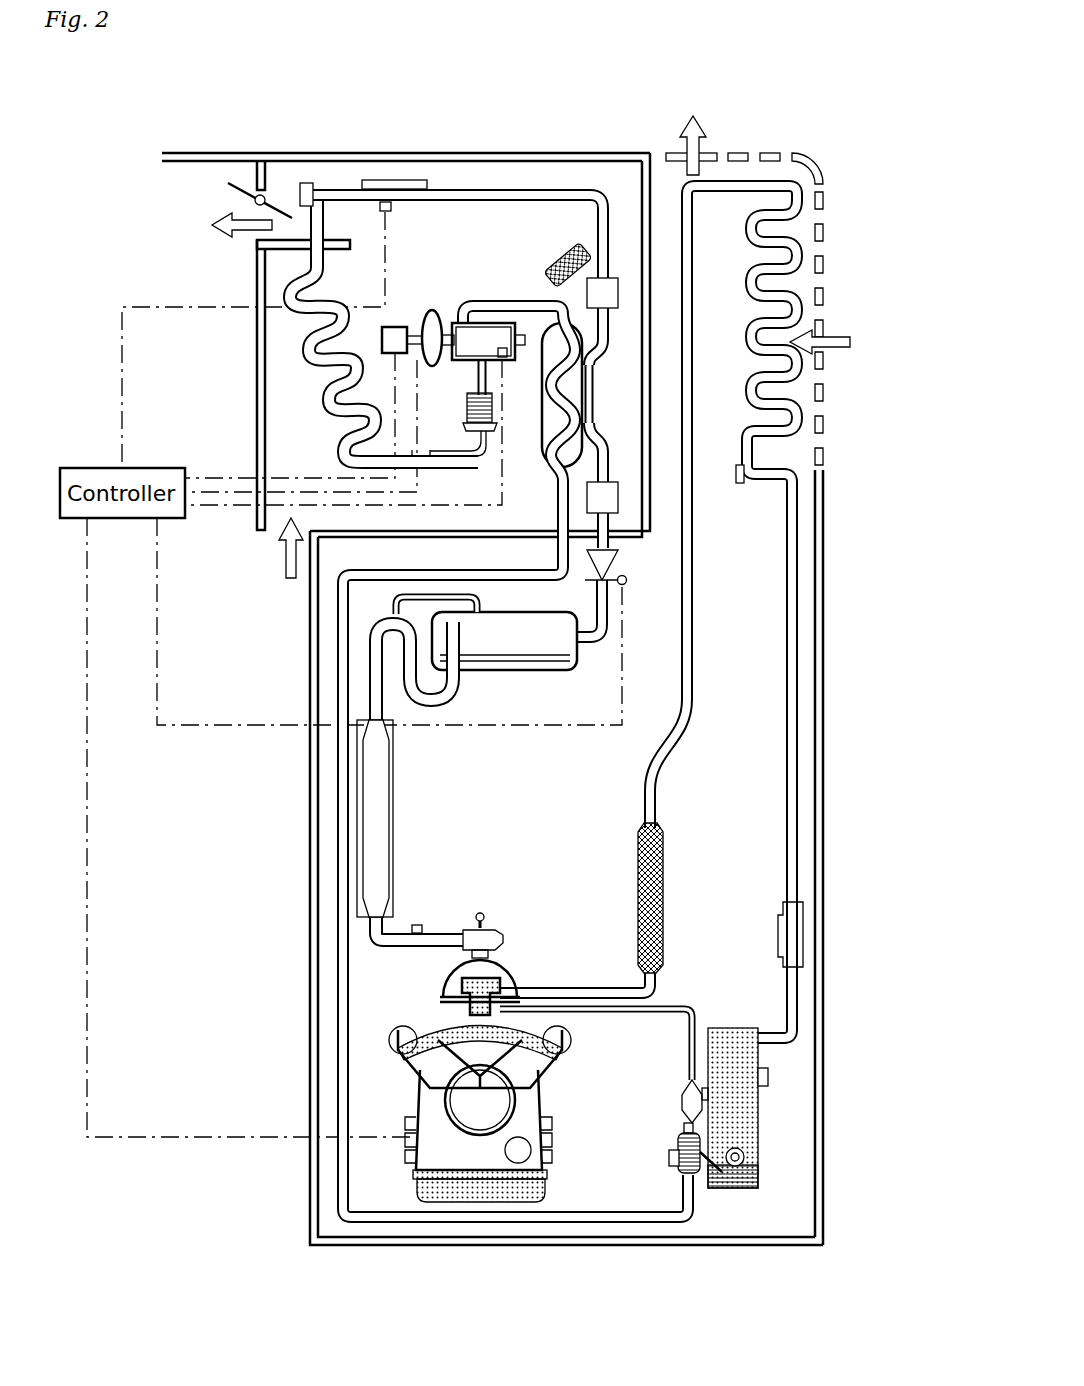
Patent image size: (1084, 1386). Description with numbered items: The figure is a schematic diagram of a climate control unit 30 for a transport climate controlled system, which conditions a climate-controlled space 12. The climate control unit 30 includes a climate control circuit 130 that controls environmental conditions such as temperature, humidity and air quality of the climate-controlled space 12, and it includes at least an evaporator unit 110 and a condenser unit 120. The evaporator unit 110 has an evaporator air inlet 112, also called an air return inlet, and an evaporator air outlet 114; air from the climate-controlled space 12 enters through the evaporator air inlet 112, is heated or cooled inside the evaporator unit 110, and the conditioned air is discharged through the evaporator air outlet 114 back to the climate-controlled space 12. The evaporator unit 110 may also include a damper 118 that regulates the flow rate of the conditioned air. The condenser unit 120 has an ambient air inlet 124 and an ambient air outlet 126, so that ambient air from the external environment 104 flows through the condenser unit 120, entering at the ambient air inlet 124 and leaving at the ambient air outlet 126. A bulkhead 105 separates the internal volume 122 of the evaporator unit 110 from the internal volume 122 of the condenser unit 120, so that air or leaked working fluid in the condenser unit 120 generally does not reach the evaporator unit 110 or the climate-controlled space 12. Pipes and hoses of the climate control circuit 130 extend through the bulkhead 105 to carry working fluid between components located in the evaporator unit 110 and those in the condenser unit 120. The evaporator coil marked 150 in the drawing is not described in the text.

The climate-controlled space 12 is at (215, 182).
The climate control unit 30 is at (853, 105).
The external environment 104 is at (878, 500).
The bulkhead 105 is at (360, 538).
The evaporator unit 110 is at (401, 151).
The evaporator air inlet 112 is at (276, 530).
The evaporator air outlet 114 is at (258, 235).
The damper 118 is at (240, 200).
The condenser unit 120 is at (370, 1250).
The internal volume 122 is at (752, 517).
The ambient air inlet 124 is at (830, 311).
The ambient air outlet 126 is at (722, 151).
The climate control circuit 130 is at (340, 180).
The evaporator coil 150 is at (310, 370).